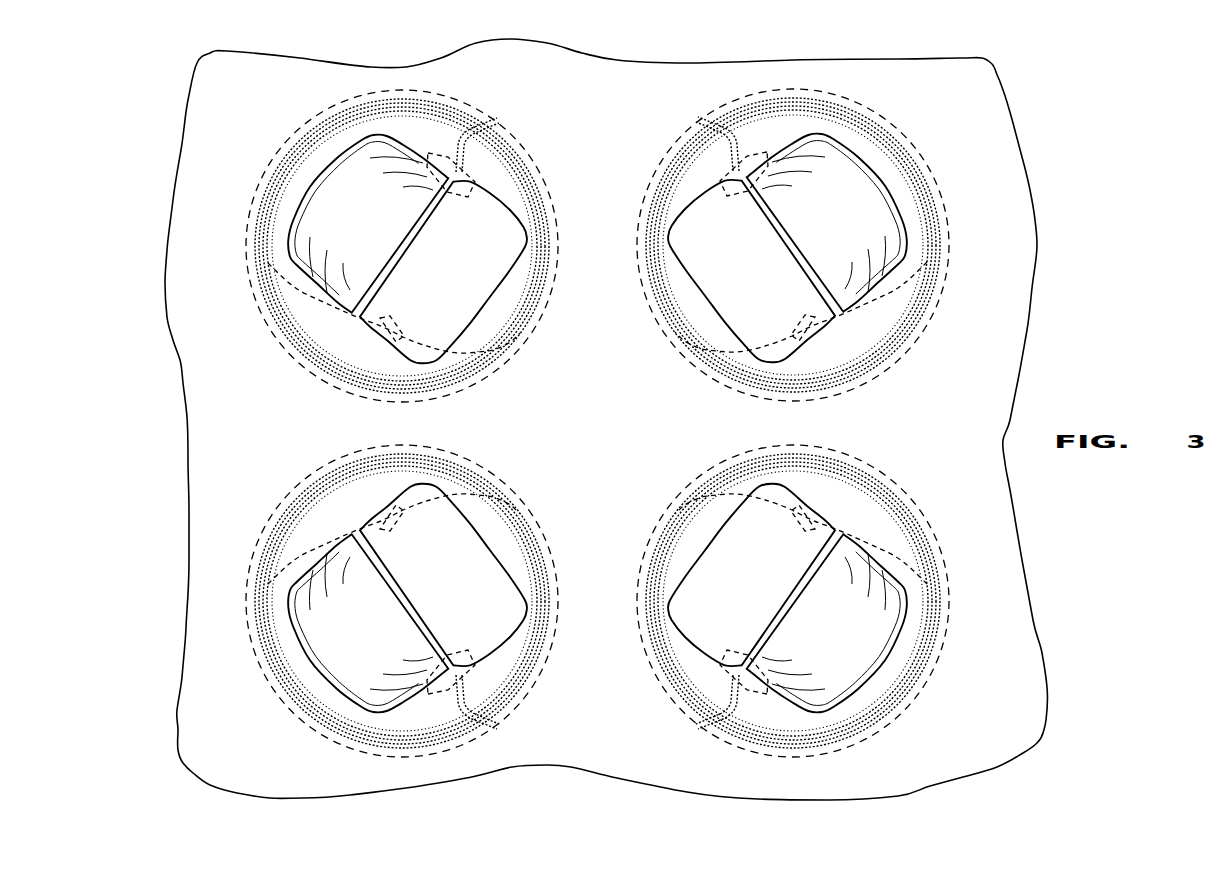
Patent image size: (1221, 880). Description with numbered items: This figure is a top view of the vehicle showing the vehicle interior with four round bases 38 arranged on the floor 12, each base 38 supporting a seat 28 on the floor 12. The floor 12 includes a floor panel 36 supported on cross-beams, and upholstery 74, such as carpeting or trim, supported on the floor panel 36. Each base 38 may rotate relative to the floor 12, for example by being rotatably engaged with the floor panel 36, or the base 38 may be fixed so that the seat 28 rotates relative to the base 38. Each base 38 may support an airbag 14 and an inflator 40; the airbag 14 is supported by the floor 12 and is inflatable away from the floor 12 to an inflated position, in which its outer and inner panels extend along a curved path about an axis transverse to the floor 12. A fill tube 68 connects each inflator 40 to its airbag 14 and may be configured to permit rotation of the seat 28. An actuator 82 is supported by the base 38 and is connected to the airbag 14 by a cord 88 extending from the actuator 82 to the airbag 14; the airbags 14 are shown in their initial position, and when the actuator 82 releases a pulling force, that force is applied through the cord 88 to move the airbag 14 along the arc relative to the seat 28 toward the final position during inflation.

The floor 12 is at (583, 274).
The airbag 14 is at (599, 397).
The seat 28 is at (682, 210).
The floor panel 36 is at (622, 419).
The base 38 is at (600, 423).
The inflator 40 is at (450, 164).
The fill tube 68 is at (462, 135).
The upholstery 74 is at (593, 509).
The actuator 82 is at (268, 263).
The cord 88 is at (469, 350).